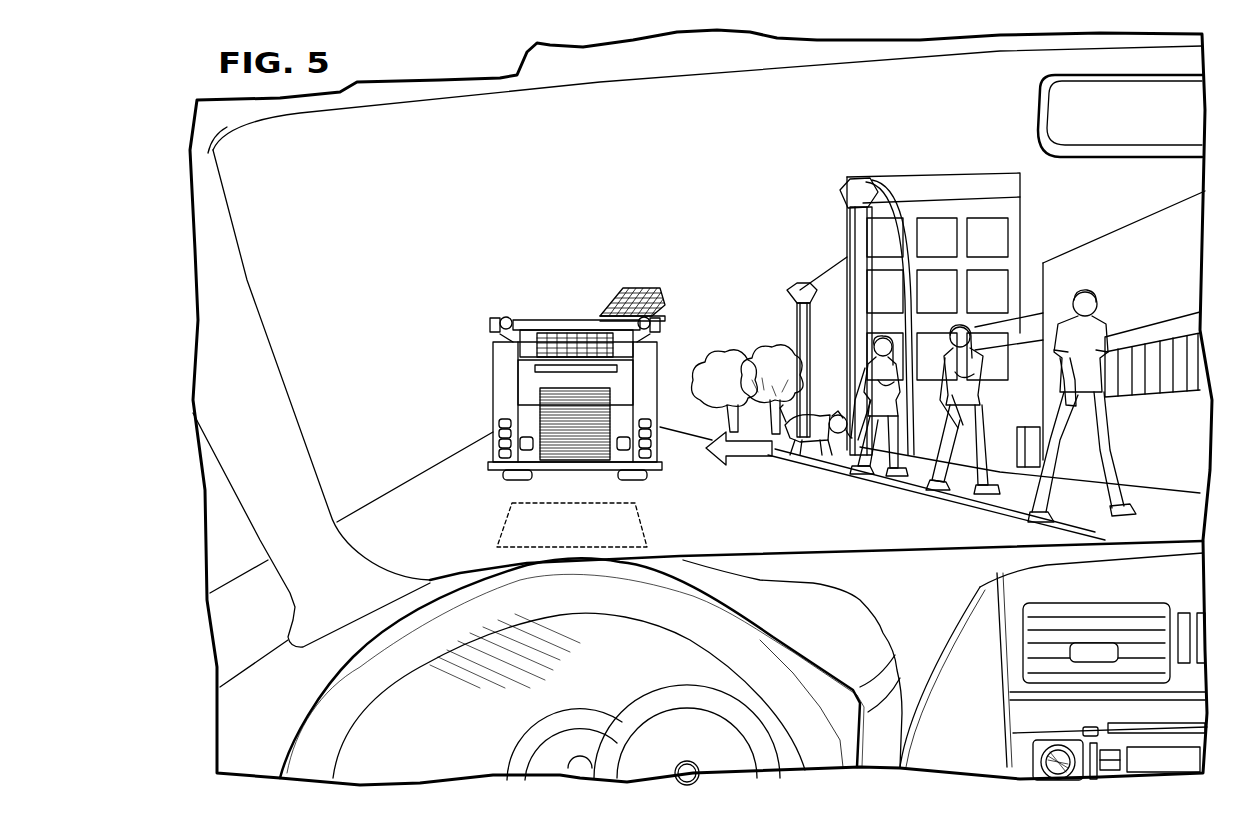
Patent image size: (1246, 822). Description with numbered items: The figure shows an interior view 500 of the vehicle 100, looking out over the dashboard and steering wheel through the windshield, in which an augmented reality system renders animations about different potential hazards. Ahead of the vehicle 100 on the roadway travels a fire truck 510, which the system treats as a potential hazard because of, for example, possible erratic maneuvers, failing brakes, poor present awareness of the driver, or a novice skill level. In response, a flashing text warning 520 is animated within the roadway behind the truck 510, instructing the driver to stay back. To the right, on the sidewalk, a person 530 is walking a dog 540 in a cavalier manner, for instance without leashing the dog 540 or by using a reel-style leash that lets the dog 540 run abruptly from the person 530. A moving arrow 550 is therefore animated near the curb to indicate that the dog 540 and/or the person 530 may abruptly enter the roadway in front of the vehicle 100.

The interior view 500 is at (488, 70).
The fire truck 510 is at (493, 386).
The flashing text warning 520 is at (497, 527).
The person 530 is at (872, 358).
The dog 540 is at (812, 420).
The moving arrow 550 is at (740, 465).
The vehicle 100 is at (943, 718).